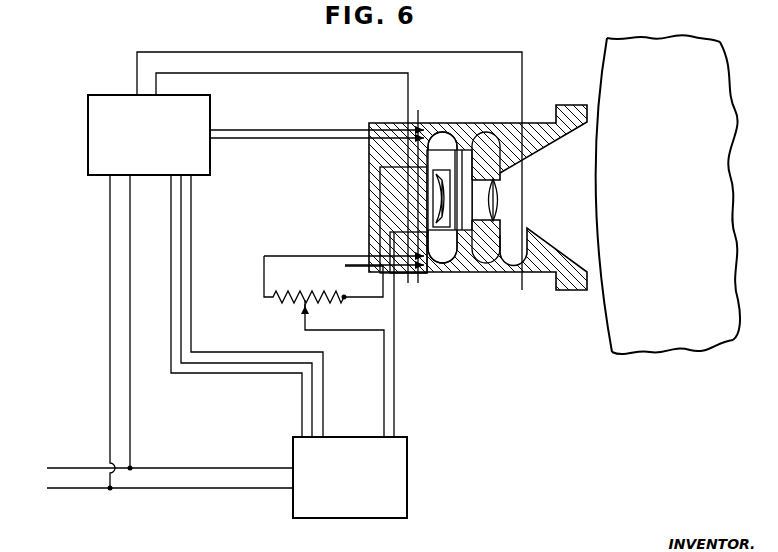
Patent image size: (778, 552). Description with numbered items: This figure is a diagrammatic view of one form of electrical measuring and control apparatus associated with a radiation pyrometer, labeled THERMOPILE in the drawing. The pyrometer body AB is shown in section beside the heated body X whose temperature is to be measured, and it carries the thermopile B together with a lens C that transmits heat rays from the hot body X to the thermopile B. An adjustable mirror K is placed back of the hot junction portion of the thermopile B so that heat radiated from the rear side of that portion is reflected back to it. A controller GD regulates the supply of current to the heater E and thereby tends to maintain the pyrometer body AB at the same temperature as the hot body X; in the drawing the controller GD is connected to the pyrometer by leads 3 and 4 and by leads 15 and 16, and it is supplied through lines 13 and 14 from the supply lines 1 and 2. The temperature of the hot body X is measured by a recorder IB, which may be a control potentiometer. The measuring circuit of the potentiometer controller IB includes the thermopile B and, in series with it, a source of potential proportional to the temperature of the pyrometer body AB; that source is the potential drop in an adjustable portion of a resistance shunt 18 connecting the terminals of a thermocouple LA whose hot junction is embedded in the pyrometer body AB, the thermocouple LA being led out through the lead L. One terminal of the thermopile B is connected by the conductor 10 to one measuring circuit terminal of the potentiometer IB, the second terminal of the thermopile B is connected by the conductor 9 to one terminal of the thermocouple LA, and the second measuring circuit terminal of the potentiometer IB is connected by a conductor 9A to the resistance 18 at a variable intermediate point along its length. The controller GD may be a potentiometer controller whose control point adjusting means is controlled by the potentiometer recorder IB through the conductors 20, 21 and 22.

The supply line 1 is at (60, 468).
The supply line 2 is at (68, 488).
The lead wire 3 is at (309, 52).
The lead wire 4 is at (308, 73).
The conductor 9 is at (367, 297).
The conductor 9A is at (362, 330).
The conductor 10 is at (394, 388).
The lead wire 13 is at (130, 339).
The lead wire 14 is at (110, 339).
The lead wire 15 is at (288, 129).
The lead wire 16 is at (288, 140).
The resistance shunt 18 is at (297, 294).
The conductor 20 is at (191, 226).
The conductor 21 is at (181, 252).
The conductor 22 is at (171, 251).
The controller GD is at (88, 124).
The recorder IB is at (407, 451).
The adjustable mirror K is at (442, 182).
The lead L is at (413, 128).
The thermocouple LA is at (413, 273).
The pyrometer body AB is at (448, 123).
The thermopile B is at (467, 123).
The lens C is at (496, 200).
The heater E is at (467, 273).
The heated body X is at (607, 83).
The thermopile THERMOPILE is at (478, 162).